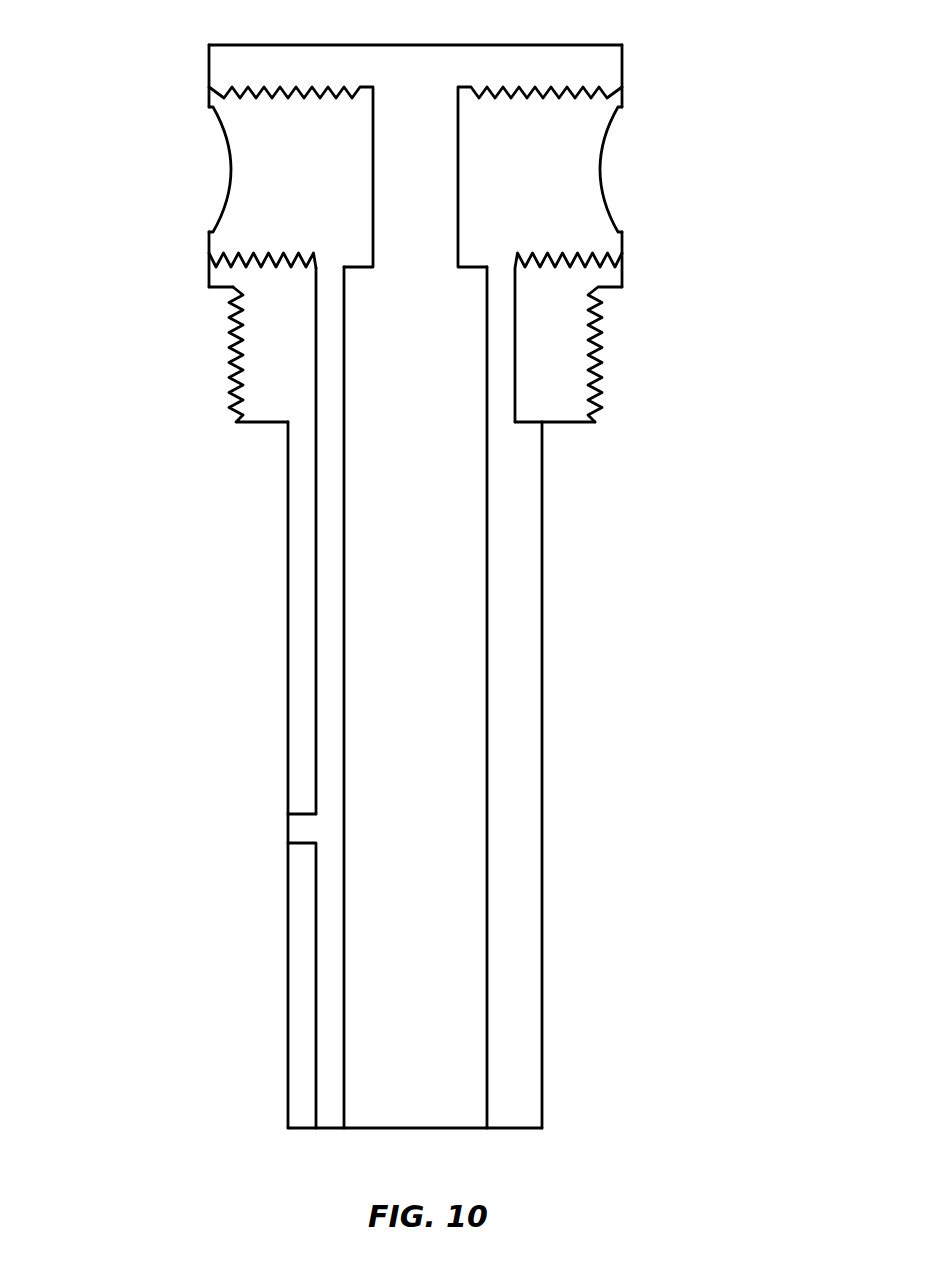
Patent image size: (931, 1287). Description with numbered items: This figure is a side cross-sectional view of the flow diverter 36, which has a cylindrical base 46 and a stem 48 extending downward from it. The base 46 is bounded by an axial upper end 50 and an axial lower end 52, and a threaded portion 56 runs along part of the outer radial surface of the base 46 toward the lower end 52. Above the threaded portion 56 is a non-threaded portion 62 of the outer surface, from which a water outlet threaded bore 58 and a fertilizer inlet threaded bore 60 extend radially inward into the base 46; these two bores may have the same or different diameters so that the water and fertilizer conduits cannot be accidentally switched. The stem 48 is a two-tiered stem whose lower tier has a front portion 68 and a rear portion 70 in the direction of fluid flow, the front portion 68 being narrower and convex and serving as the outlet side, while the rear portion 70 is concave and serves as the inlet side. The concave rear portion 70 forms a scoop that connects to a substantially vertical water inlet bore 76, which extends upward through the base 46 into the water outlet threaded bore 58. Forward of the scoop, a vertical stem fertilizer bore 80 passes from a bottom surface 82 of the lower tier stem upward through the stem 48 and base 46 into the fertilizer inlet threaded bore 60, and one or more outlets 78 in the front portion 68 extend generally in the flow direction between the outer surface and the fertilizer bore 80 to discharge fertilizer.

The flow diverter 36 is at (687, 41).
The cylindrical base 46 is at (186, 242).
The stem 48 is at (596, 711).
The axial upper end 50 is at (493, 43).
The axial lower end 52 is at (565, 423).
The threaded portion 56 is at (603, 350).
The water outlet threaded bore 58 is at (572, 170).
The fertilizer inlet threaded bore 60 is at (263, 177).
The non-threaded portion 62 is at (225, 274).
The front portion 68 is at (287, 984).
The rear portion 70 is at (590, 775).
The water inlet bore 76 is at (502, 323).
The outlets 78 is at (302, 827).
The vertical stem fertilizer bore 80 is at (332, 477).
The bottom surface 82 is at (415, 1130).